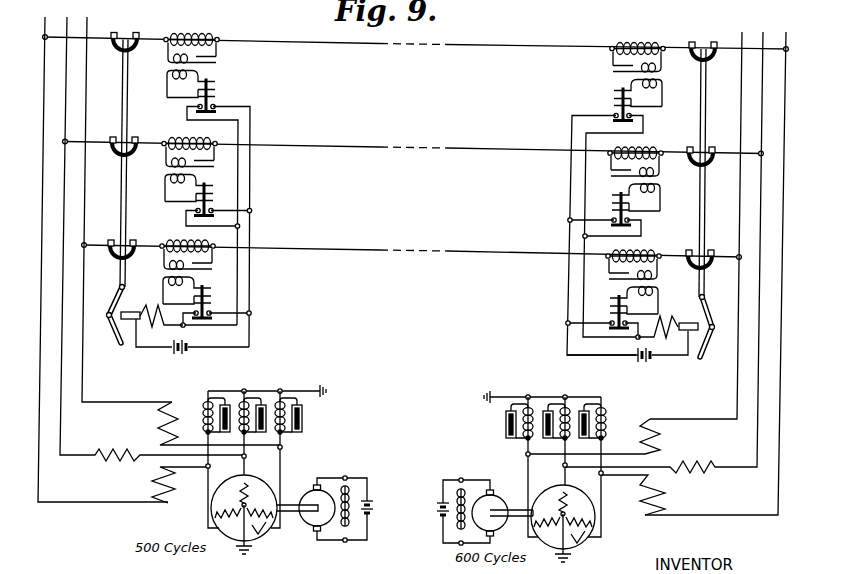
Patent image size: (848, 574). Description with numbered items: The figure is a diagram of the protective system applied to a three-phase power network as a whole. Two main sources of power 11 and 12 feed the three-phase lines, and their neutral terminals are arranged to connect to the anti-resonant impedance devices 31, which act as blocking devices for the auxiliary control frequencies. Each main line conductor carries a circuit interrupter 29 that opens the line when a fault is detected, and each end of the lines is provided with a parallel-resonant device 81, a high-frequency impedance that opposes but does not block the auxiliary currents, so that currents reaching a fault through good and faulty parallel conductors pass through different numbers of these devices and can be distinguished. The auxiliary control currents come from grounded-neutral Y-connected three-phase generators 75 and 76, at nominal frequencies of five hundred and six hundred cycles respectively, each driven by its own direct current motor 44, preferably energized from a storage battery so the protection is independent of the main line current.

The circuit interrupter 29 is at (127, 42).
The parallel-resonant device 81 is at (194, 46).
The anti-resonant impedance device 31 is at (213, 404).
The main source of power 11 is at (134, 436).
The main source of power 12 is at (705, 448).
The motor 44 is at (331, 490).
The three-phase generator 75 is at (247, 517).
The three-phase generator 76 is at (553, 499).